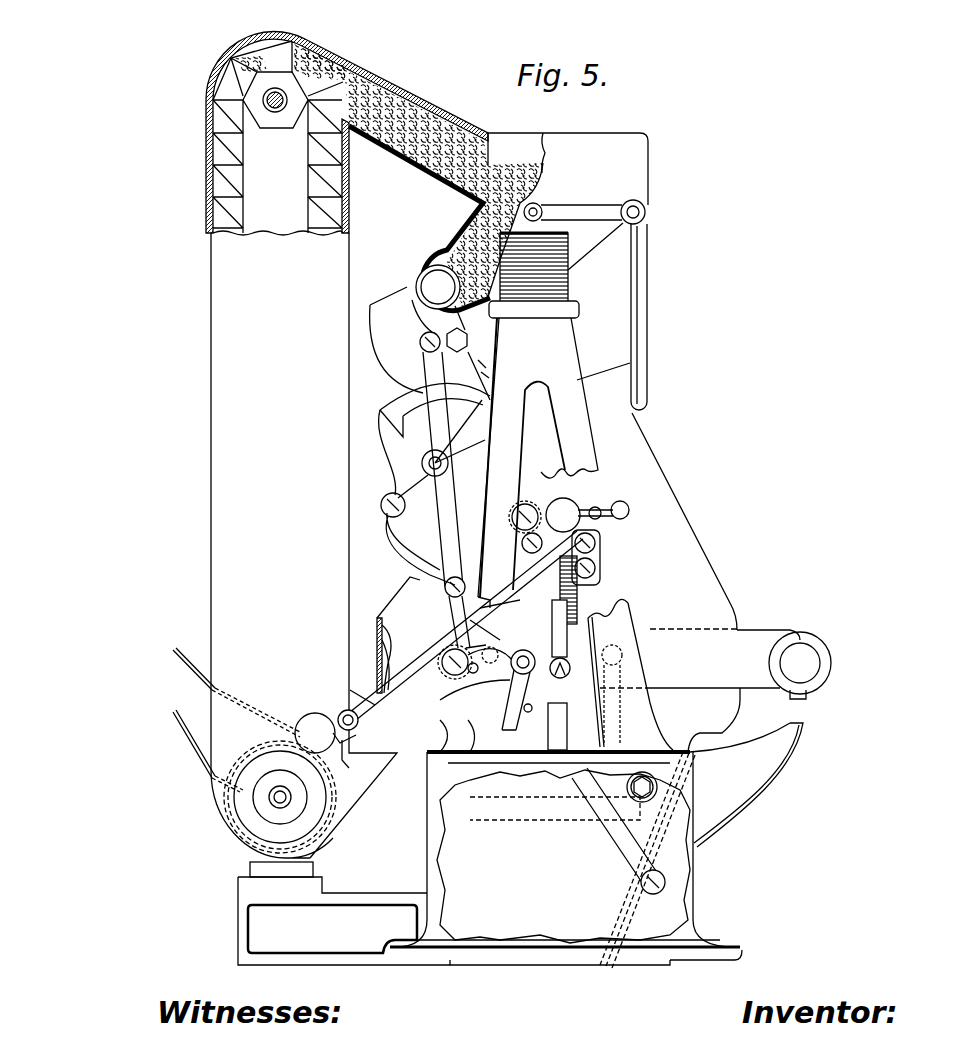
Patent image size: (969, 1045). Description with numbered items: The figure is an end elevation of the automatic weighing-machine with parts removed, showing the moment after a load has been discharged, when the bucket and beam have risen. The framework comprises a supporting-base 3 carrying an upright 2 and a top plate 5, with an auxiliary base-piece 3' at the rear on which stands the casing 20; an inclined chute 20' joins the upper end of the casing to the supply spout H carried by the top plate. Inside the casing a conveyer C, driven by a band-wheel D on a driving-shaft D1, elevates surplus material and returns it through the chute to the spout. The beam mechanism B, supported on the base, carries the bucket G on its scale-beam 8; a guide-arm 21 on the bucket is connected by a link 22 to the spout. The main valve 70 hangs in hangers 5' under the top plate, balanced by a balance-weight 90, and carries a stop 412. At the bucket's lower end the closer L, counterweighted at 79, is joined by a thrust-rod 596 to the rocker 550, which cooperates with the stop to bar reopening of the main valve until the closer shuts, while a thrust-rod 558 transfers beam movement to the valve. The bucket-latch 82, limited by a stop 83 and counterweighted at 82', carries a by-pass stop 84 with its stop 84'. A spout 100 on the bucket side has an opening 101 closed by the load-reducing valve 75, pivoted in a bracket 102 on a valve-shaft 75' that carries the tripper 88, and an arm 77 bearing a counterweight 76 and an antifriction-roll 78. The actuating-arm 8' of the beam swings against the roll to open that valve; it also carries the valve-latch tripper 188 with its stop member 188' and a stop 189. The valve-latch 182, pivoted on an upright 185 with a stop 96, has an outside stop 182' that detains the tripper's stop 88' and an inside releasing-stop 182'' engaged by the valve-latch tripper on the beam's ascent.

The casing 20 is at (347, 445).
The inclined chute 20' is at (388, 177).
The conveyer C is at (275, 152).
The supply spout H is at (568, 169).
The link 22 is at (582, 207).
The guide-arm 21 is at (648, 282).
The top plate 5 is at (541, 275).
The upright 2 is at (571, 355).
The stop 412 is at (483, 352).
The balance-weight 90 is at (438, 287).
The hangers 5' is at (417, 340).
The main valve 70 is at (424, 488).
The rocker 550 is at (410, 440).
The thrust-rod 558 is at (447, 513).
The thrust-rod 596 is at (415, 557).
The bucket-latch 82 is at (528, 508).
The stop 83 is at (560, 505).
The counterweight 82' is at (598, 527).
The by-pass stop 84 is at (611, 524).
The stop 84' is at (604, 584).
The tripper 88 is at (577, 634).
The bucket G is at (690, 538).
The beam mechanism B is at (715, 664).
The scale-beam 8 is at (630, 674).
The counterweight 79 is at (715, 713).
The antifriction-roll 78 is at (400, 690).
The valve-latch tripper 188 is at (471, 674).
The releasing-stop 182'' is at (501, 643).
The valve-latch 182 is at (539, 690).
The stop 189 is at (474, 674).
The stop 96 is at (532, 709).
The actuating-arm 8' is at (457, 736).
The stop 88' is at (459, 599).
The stop member 188' is at (452, 625).
The spout 100 is at (376, 648).
The opening 101 is at (377, 665).
The load-reducing valve 75 is at (346, 689).
The valve-shaft 75' is at (328, 709).
The counterweight 76 is at (310, 728).
The arm 77 is at (345, 759).
The bracket 102 is at (378, 728).
The band-wheel D is at (245, 766).
The driving-shaft D1 is at (282, 799).
The auxiliary base-piece 3' is at (344, 913).
The supporting-base 3 is at (566, 858).
The closer L is at (632, 878).
The stop 182' is at (495, 781).
The upright 185 is at (525, 735).